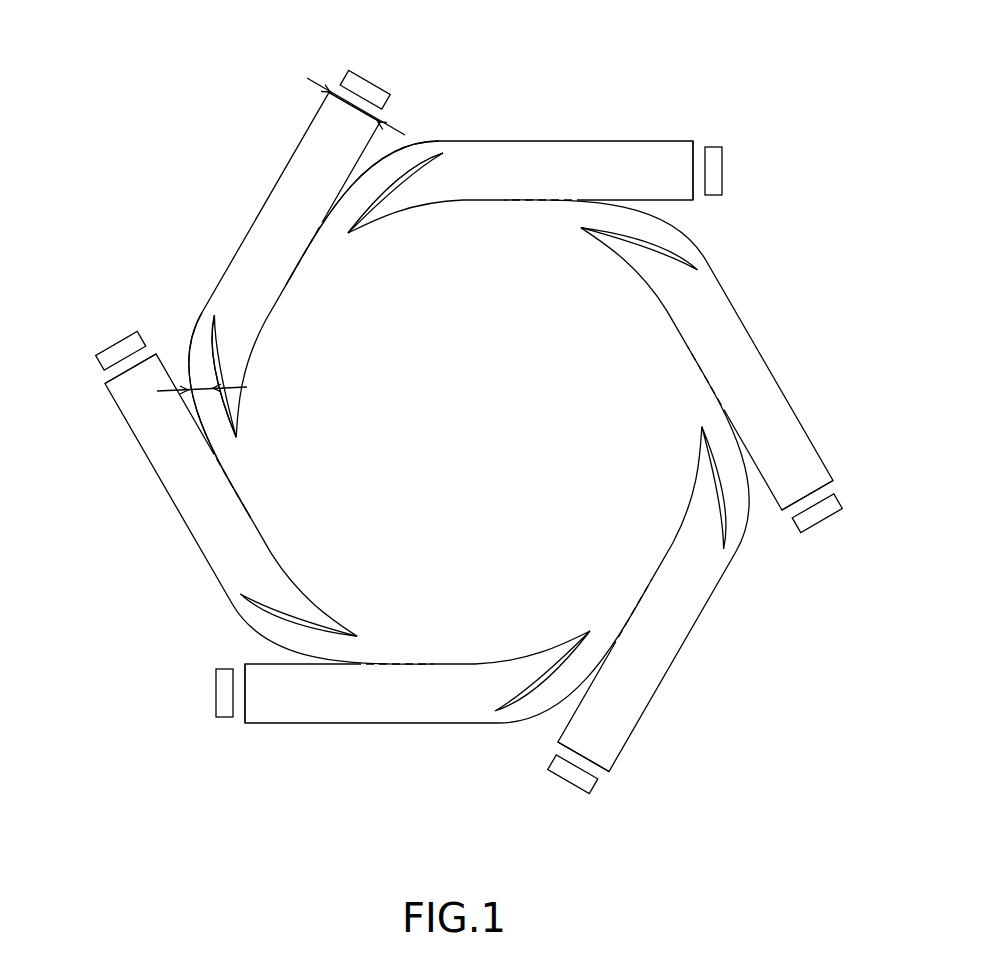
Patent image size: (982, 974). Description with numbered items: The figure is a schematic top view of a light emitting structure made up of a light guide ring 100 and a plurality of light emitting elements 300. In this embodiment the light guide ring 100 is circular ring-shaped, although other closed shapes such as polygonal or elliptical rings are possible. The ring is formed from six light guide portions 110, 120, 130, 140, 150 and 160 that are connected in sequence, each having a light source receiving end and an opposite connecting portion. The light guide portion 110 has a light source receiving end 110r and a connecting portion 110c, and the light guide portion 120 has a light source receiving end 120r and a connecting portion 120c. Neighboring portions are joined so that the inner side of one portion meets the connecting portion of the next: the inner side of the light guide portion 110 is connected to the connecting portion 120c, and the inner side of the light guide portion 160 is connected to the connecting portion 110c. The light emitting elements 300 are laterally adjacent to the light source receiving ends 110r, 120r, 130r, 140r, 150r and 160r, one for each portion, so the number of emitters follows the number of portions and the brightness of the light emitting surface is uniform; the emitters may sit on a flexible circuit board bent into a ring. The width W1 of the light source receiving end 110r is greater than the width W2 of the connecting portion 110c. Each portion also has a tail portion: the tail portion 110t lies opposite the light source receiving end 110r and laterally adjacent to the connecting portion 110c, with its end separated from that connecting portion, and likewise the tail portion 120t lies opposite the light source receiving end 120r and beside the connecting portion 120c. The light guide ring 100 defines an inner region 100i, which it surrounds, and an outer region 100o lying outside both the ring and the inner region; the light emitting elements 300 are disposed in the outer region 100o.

The light guide ring 100 is at (112, 55).
The outer region 100o is at (713, 44).
The inner region 100i is at (494, 448).
The light guide portion 110 is at (285, 168).
The light guide portion 120 is at (575, 141).
The light guide portion 130 is at (787, 393).
The light guide portion 140 is at (660, 693).
The light guide portion 150 is at (357, 723).
The light guide portion 160 is at (150, 467).
The light source receiving end 110r is at (344, 86).
The light source receiving end 120r is at (697, 160).
The light source receiving end 130r is at (868, 490).
The light source receiving end 140r is at (600, 775).
The light source receiving end 150r is at (240, 713).
The light source receiving end 160r is at (108, 375).
The connecting portion 110c is at (199, 345).
The connecting portion 120c is at (406, 150).
The tail portion 110t is at (232, 350).
The tail portion 120t is at (432, 184).
The light emitting element 300 is at (368, 86).
The width of the light source receiving end W1 is at (356, 107).
The width of the connecting portion W2 is at (234, 433).